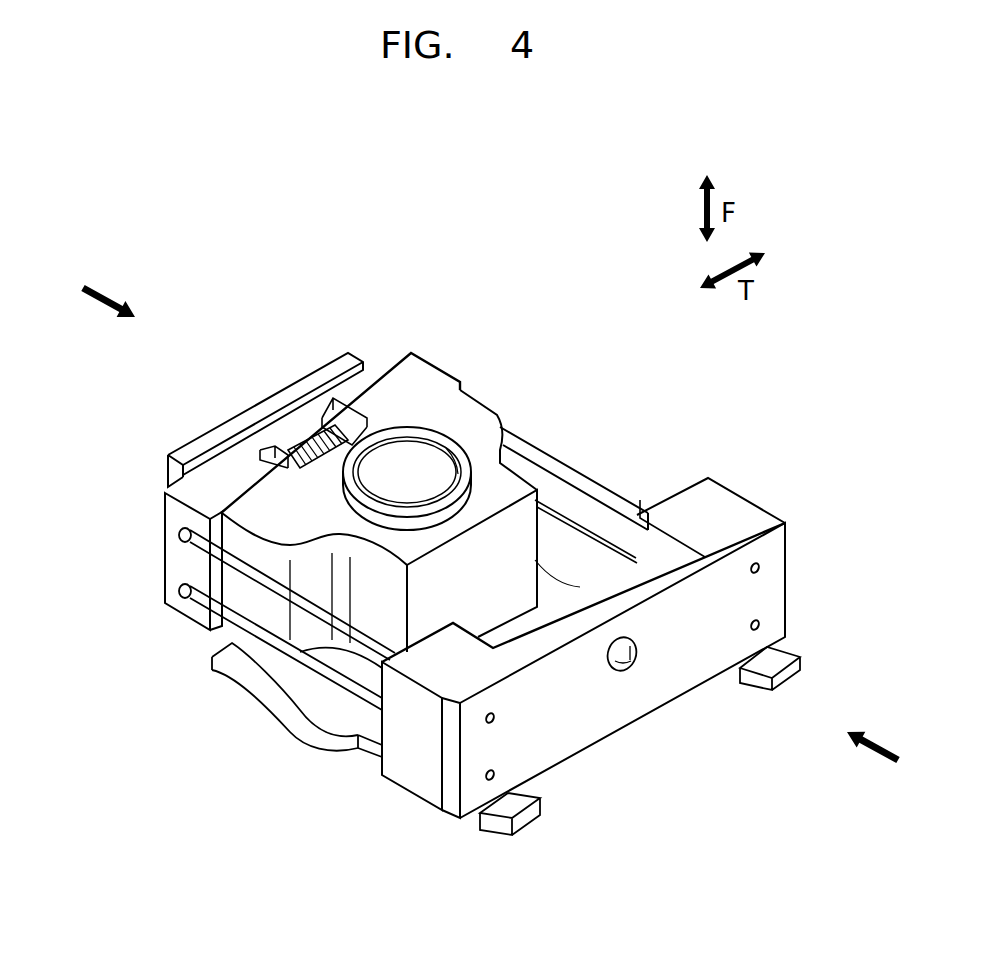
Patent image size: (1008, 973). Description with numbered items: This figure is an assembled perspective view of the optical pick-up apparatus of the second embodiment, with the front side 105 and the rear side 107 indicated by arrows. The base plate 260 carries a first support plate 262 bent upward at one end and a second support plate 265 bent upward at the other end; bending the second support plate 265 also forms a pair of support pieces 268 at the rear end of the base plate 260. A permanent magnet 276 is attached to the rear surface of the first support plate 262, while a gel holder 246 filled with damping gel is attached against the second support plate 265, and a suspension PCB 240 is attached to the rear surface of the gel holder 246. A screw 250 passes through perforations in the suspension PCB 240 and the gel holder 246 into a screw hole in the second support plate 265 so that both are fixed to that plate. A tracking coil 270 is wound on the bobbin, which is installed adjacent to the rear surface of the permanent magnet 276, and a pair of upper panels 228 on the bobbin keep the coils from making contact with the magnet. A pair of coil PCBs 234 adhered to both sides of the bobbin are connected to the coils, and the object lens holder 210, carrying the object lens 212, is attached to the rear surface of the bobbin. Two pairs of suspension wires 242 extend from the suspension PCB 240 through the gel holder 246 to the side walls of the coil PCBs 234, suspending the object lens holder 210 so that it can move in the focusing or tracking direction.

The front side direction 105 is at (92, 300).
The rear side direction 107 is at (883, 742).
The object lens holder 210 is at (463, 423).
The object lens 212 is at (387, 450).
The upper panels 228 is at (390, 378).
The coil PCBs 234 is at (177, 600).
The suspension PCB 240 is at (677, 645).
The suspension wires 242 is at (310, 668).
The gel holder 246 is at (698, 515).
The screw 250 is at (628, 660).
The base plate 260 is at (330, 705).
The first support plate 262 is at (265, 403).
The second support plate 265 is at (600, 580).
The support pieces 268 is at (517, 800).
The tracking coil 270 is at (317, 442).
The permanent magnet 276 is at (228, 447).